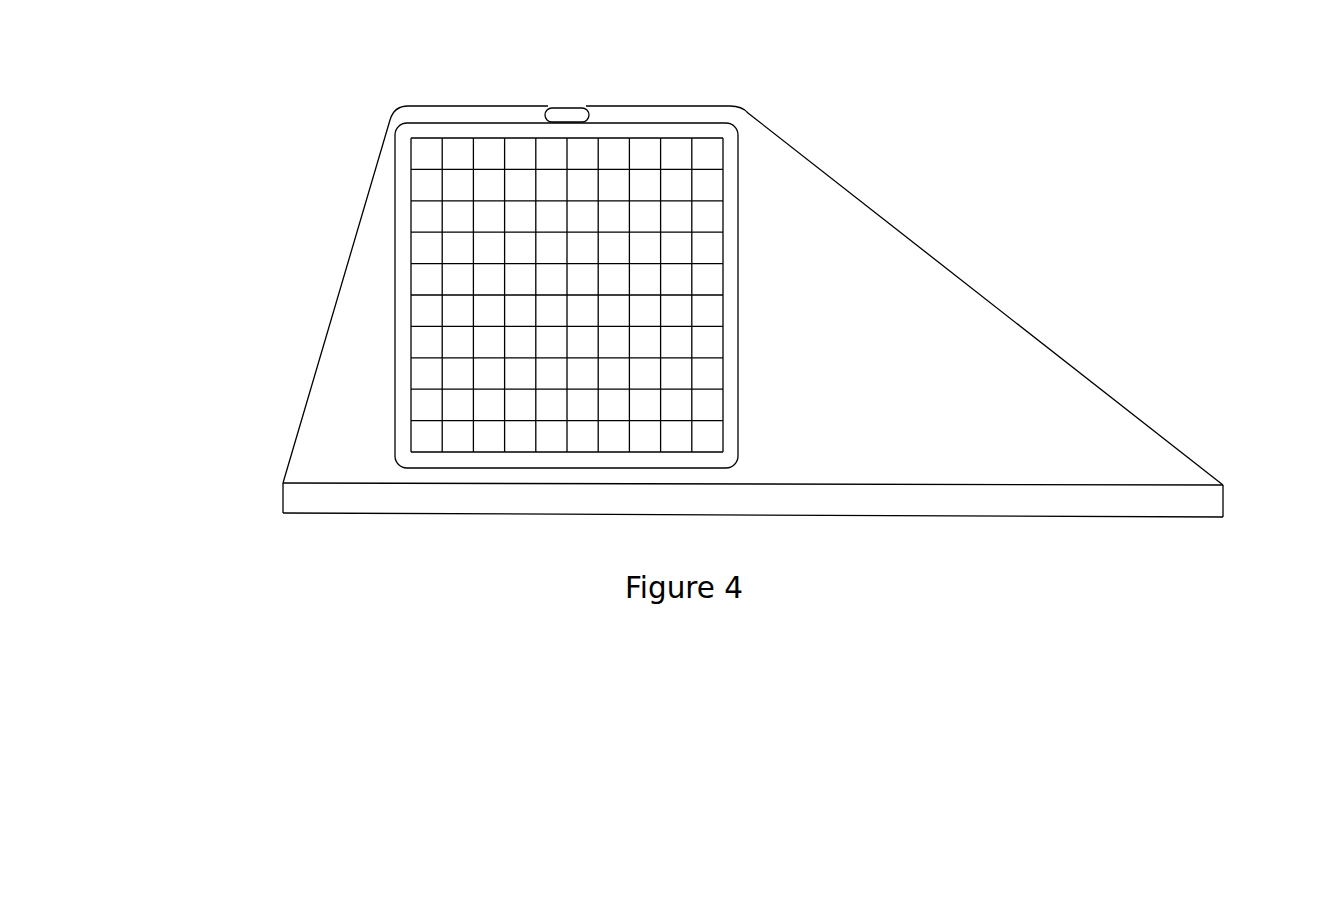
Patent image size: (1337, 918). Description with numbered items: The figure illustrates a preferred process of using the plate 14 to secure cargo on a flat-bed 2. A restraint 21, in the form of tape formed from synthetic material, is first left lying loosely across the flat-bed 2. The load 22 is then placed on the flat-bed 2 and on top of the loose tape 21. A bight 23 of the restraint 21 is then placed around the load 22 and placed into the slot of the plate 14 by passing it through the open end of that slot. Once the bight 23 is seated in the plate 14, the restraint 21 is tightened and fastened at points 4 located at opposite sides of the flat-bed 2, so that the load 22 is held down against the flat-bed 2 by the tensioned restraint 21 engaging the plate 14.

The flat-bed 2 is at (890, 520).
The points 4 is at (282, 483).
The plate 14 is at (571, 103).
The restraint 21 is at (963, 278).
The load 22 is at (682, 212).
The bight 23 is at (741, 336).